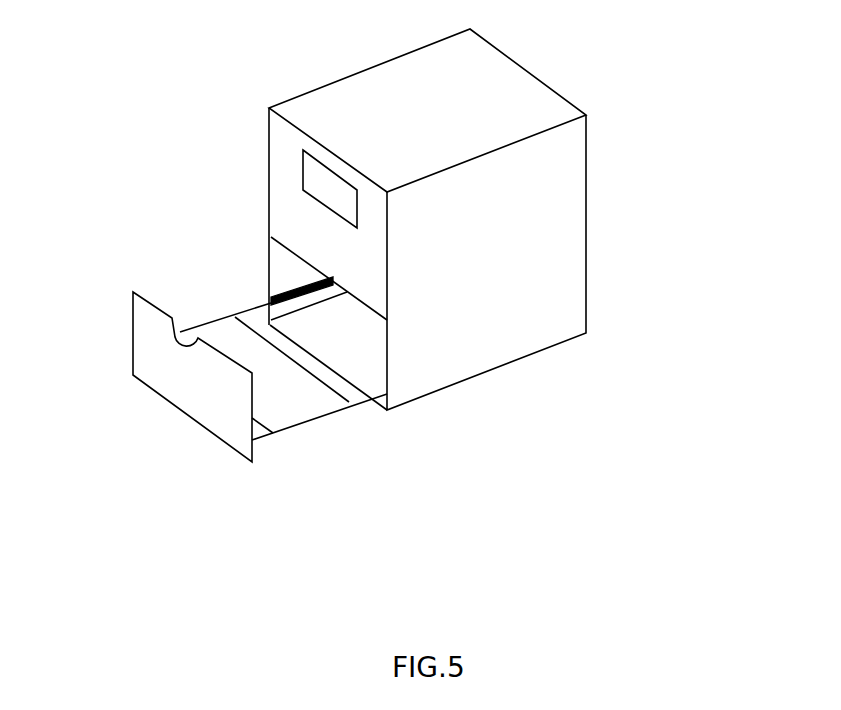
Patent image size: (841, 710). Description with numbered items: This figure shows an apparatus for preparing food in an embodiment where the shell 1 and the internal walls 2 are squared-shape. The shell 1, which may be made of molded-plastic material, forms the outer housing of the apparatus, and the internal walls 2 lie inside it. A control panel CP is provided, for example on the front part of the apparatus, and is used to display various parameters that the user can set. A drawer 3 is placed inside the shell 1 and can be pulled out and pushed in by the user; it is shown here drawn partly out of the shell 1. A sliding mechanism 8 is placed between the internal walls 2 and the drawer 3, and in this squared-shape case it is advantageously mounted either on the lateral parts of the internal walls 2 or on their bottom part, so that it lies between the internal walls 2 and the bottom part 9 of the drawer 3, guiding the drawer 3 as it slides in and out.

The shell 1 is at (540, 245).
The control panel CP is at (312, 185).
The internal walls 2 is at (283, 260).
The sliding mechanism 8 is at (282, 292).
The drawer 3 is at (157, 352).
The bottom part of the drawer 9 is at (268, 417).